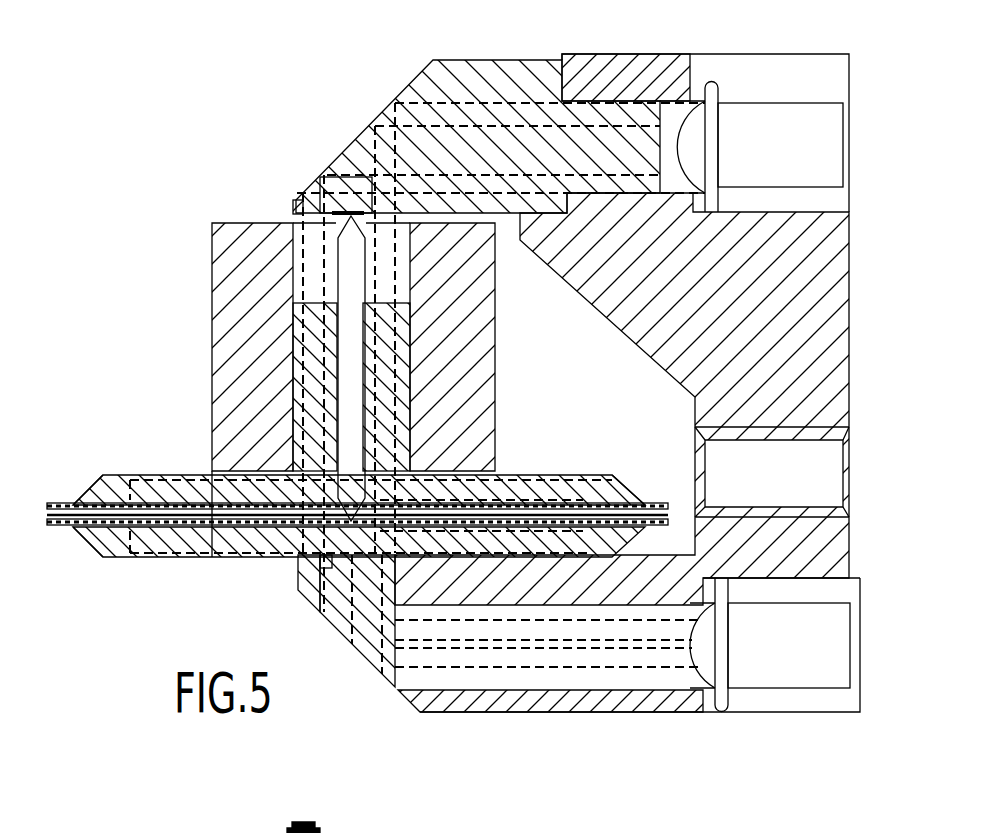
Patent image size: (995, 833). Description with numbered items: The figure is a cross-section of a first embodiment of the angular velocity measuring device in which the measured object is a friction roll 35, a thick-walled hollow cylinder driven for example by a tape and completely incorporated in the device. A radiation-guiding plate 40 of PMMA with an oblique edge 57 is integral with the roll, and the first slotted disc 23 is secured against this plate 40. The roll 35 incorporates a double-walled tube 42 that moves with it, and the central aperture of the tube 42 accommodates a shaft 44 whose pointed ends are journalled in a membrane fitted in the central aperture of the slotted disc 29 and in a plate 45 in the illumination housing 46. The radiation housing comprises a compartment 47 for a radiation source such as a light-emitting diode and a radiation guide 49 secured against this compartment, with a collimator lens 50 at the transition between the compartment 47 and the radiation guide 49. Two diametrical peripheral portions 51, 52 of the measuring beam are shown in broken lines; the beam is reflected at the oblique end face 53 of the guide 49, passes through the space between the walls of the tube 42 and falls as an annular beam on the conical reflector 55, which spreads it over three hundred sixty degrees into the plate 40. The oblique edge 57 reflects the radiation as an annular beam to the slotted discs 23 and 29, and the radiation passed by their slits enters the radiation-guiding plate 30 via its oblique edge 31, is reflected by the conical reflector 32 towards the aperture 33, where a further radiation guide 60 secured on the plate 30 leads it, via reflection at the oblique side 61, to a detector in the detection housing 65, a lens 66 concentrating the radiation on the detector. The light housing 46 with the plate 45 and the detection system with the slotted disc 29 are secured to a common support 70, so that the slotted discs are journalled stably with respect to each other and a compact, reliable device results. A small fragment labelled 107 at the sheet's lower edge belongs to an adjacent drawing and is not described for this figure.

The first slotted disc 23 is at (55, 503).
The slotted disc 29 is at (58, 525).
The radiation-guiding plate 30 is at (118, 557).
The oblique edge 31 is at (98, 547).
The conical reflector 32 is at (318, 562).
The aperture 33 is at (305, 594).
The friction roll 35 is at (232, 368).
The radiation-guiding plate 40 is at (117, 480).
The double-walled tube 42 is at (300, 315).
The shaft 44 is at (345, 322).
The plate 45 is at (333, 208).
The illumination housing 46 is at (503, 42).
The compartment 47 is at (779, 125).
The radiation guide 49 is at (430, 83).
The lens 50 is at (697, 123).
The diametrical peripheral portion of the measuring beam 51 is at (395, 115).
The diametrical peripheral portion of the measuring beam 52 is at (338, 183).
The oblique end face 53 is at (364, 140).
The conical reflector 55 is at (300, 478).
The oblique edge 57 is at (98, 478).
The further radiation guide 60 is at (325, 600).
The oblique side 61 is at (360, 632).
The detection housing 65 is at (800, 675).
The lens 66 is at (708, 667).
The common support 70 is at (775, 560).
The fragment 107 is at (310, 821).